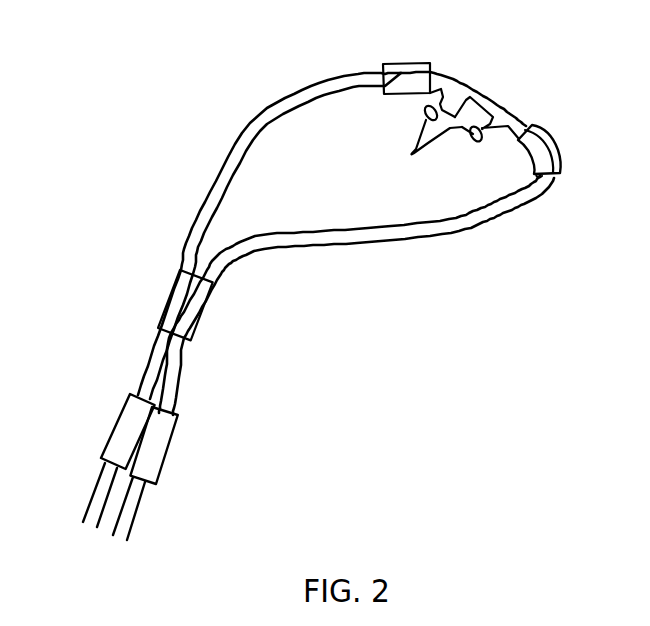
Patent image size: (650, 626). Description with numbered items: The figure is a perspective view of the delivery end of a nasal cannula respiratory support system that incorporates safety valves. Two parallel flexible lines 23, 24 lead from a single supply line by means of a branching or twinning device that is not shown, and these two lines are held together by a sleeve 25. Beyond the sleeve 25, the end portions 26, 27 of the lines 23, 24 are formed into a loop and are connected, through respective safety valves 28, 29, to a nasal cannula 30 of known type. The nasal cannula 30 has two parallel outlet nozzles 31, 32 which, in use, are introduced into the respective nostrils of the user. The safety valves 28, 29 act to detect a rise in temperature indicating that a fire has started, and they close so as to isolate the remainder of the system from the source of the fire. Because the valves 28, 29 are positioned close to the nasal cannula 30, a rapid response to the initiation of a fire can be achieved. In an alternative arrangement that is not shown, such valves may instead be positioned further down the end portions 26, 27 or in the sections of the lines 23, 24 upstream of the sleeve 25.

The flexible line 23 is at (98, 497).
The flexible line 24 is at (130, 510).
The sleeve 25 is at (167, 300).
The end portion 26 is at (278, 113).
The end portion 27 is at (458, 231).
The safety valve 28 is at (398, 63).
The safety valve 29 is at (560, 150).
The nasal cannula 30 is at (463, 86).
The outlet nozzle 31 is at (427, 113).
The outlet nozzle 32 is at (477, 143).